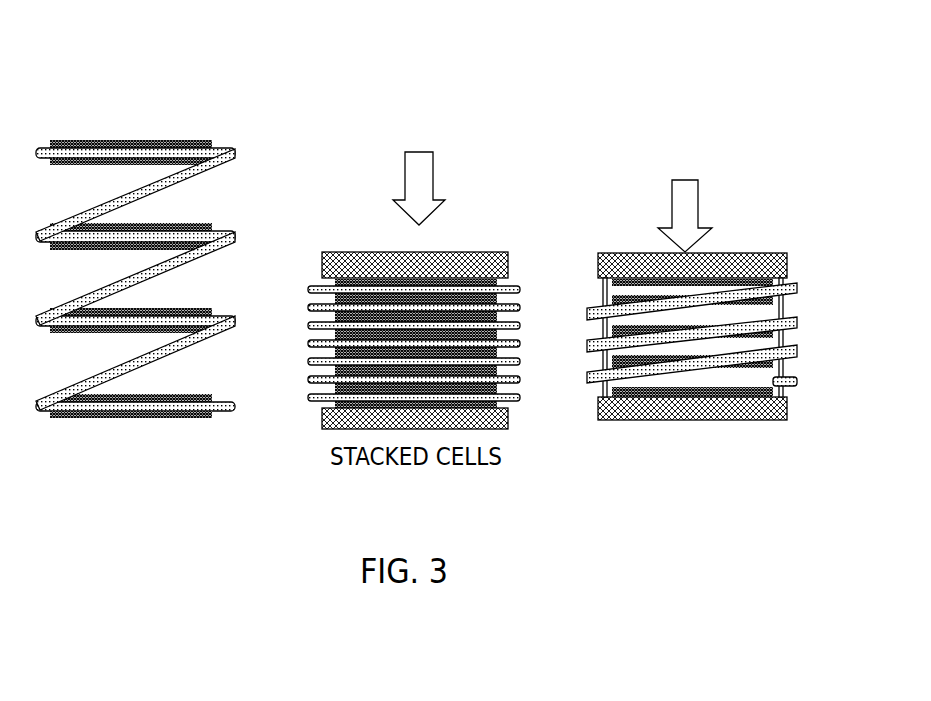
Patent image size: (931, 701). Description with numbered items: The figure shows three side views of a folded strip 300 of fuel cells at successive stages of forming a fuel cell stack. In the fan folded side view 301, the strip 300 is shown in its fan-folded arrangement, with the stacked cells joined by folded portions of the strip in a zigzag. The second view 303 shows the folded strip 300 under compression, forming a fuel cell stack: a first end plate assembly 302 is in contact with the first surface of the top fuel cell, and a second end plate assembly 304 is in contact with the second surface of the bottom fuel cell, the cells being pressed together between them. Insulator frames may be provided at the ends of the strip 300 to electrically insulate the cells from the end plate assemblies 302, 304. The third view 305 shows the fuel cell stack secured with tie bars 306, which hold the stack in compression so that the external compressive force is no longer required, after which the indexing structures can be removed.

The folded strip 300 is at (91, 131).
The fan folded side view 301 is at (135, 233).
The first end plate assembly 302 is at (456, 251).
The second view 303 is at (408, 66).
The second end plate assembly 304 is at (508, 424).
The third view 305 is at (663, 214).
The tie bars 306 is at (601, 302).